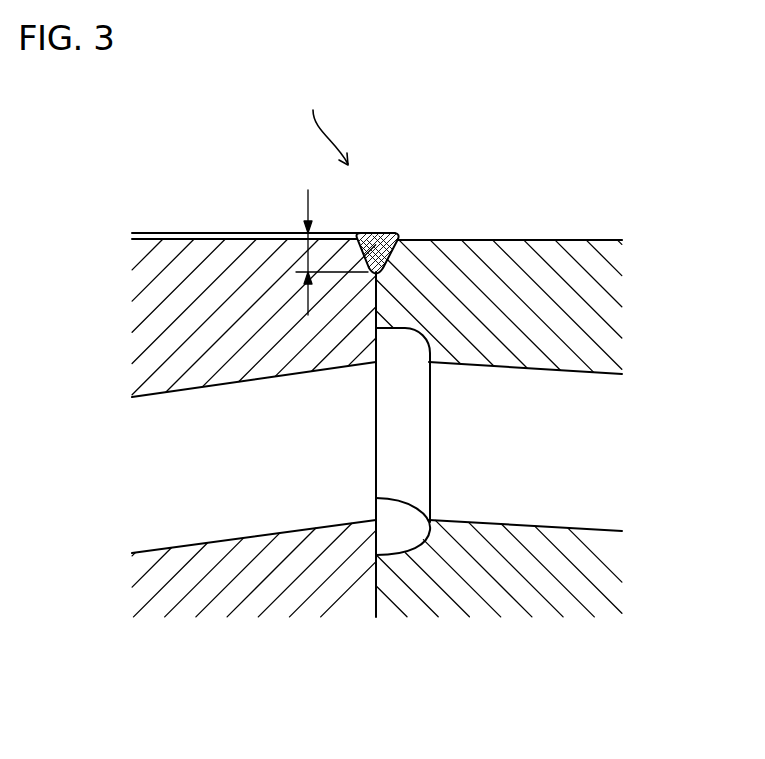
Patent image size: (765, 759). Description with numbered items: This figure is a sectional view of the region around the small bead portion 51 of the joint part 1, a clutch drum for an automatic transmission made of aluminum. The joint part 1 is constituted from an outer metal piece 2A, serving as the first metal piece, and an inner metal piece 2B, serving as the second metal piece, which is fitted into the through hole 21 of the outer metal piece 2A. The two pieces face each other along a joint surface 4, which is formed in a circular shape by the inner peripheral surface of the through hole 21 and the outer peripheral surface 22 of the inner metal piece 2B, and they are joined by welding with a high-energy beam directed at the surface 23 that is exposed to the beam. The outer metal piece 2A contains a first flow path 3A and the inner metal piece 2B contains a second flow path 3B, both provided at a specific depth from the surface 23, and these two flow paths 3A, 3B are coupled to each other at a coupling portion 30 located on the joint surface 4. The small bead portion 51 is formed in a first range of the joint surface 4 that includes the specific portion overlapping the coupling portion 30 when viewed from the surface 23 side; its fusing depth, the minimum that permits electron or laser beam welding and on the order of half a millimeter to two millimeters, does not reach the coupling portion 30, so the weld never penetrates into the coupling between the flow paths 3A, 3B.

The joint part 1 is at (627, 189).
The outer metal piece 2A is at (215, 272).
The inner metal piece 2B is at (535, 270).
The first flow path 3A is at (192, 455).
The second flow path 3B is at (555, 448).
The joint surface 4 is at (376, 579).
The through hole 21 is at (428, 522).
The outer peripheral surface 22 is at (376, 475).
The surface 23 is at (450, 240).
The coupling portion 30 is at (376, 433).
The small bead portion 51 is at (372, 233).